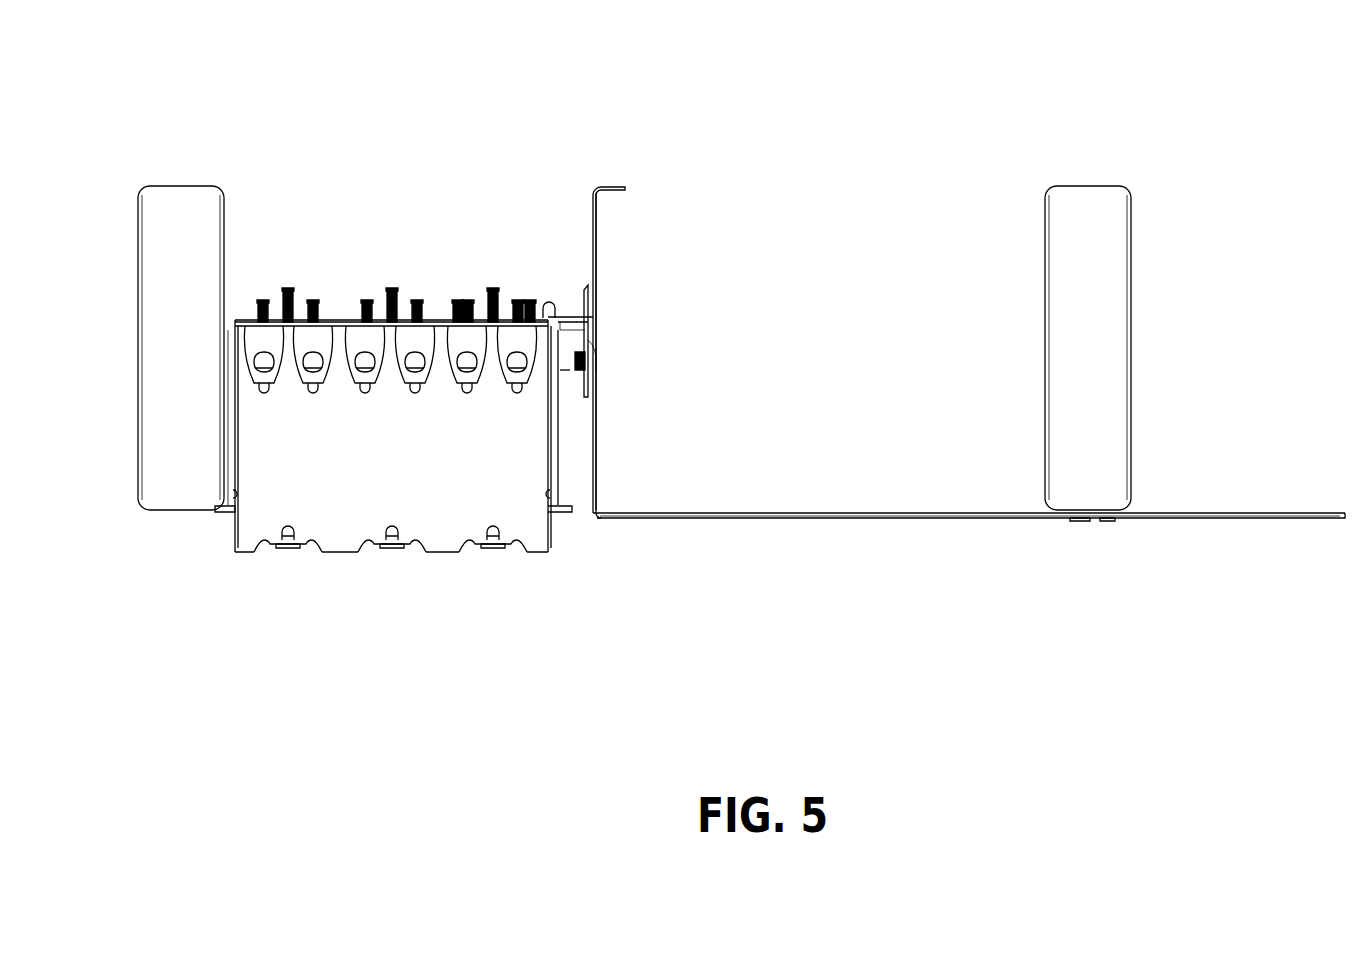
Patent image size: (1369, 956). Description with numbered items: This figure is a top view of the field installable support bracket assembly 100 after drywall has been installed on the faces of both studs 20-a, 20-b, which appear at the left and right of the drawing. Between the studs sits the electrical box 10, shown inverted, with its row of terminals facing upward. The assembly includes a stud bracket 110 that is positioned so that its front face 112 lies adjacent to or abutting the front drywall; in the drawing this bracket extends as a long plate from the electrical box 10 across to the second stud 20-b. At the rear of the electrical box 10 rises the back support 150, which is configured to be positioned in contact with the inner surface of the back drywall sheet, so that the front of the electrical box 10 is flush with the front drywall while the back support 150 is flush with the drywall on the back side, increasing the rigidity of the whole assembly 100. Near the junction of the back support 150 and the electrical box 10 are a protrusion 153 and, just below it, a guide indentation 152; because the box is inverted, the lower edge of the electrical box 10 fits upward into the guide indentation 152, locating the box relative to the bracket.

The electrical box 10 is at (297, 547).
The stud 20-a is at (170, 512).
The stud 20-b is at (1125, 303).
The field installable support bracket assembly 100 is at (728, 435).
The stud bracket 110 is at (990, 515).
The front face 112 is at (810, 523).
The back support 150 is at (615, 173).
The guide indentation 152 is at (555, 330).
The protrusion 153 is at (547, 305).